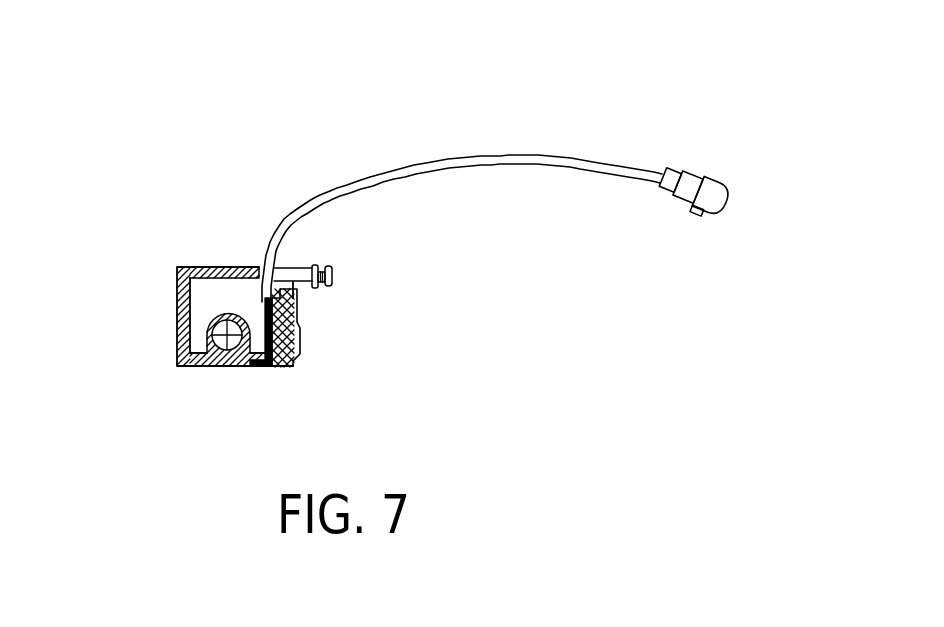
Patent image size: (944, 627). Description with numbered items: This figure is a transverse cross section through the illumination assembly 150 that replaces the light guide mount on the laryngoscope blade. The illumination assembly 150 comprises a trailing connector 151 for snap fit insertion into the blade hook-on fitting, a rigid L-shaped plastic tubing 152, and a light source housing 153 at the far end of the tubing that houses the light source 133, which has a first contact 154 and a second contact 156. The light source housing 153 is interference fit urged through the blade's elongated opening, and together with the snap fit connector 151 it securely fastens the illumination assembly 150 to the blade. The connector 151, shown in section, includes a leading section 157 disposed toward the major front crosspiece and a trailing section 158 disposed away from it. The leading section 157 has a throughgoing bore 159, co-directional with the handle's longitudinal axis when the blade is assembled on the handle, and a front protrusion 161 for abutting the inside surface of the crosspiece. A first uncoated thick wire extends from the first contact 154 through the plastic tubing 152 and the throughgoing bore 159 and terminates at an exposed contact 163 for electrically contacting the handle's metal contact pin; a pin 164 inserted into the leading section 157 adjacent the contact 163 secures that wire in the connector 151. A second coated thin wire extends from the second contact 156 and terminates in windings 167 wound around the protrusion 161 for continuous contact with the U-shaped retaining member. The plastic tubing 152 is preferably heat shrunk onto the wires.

The illumination assembly 150 is at (683, 72).
The trailing connector 151 is at (158, 195).
The rigid L-shaped plastic tubing 152 is at (537, 168).
The light source housing 153 is at (697, 215).
The light source 133 is at (730, 202).
The first contact 154 is at (682, 177).
The second contact 156 is at (673, 192).
The leading section 157 is at (292, 367).
The trailing section 158 is at (198, 368).
The throughgoing bore 159 is at (248, 267).
The front protrusion 161 is at (317, 267).
The exposed contact 163 is at (258, 368).
The pin 164 is at (280, 368).
The windings 167 is at (323, 292).